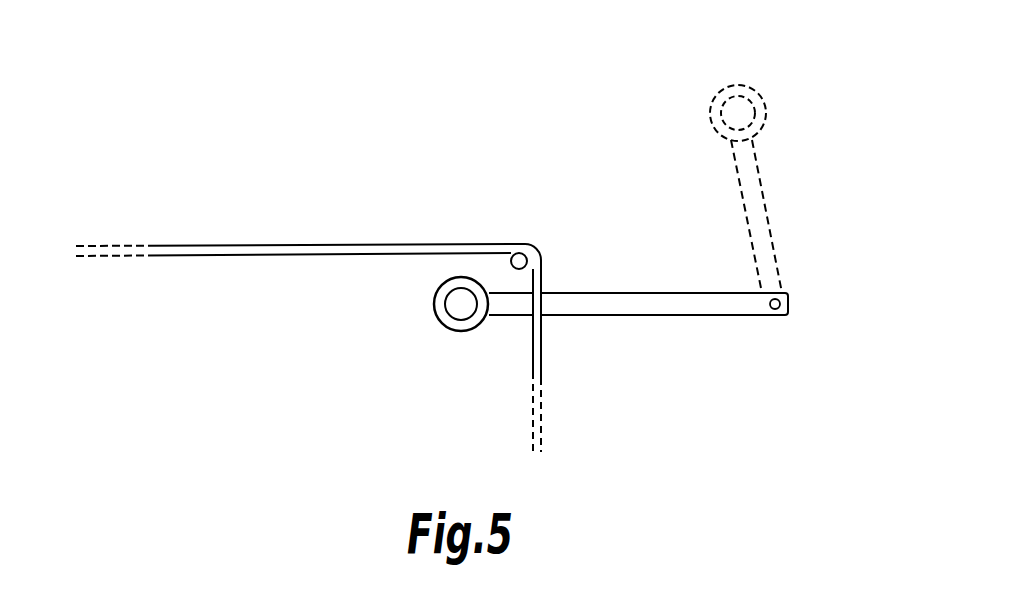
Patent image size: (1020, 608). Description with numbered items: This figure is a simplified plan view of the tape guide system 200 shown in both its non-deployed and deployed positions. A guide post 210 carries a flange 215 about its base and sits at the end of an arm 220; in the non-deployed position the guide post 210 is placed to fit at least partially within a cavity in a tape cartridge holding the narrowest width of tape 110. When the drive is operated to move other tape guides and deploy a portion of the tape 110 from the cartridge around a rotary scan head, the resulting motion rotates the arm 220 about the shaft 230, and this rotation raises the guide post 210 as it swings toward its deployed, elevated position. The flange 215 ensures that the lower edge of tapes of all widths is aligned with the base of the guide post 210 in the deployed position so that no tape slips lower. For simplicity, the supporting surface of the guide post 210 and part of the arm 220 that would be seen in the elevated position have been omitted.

The tape 110 is at (268, 246).
The tape guide system 200 is at (794, 356).
The guide post 210 is at (459, 310).
The flange 215 is at (466, 333).
The arm 220 is at (660, 306).
The shaft 230 is at (788, 304).